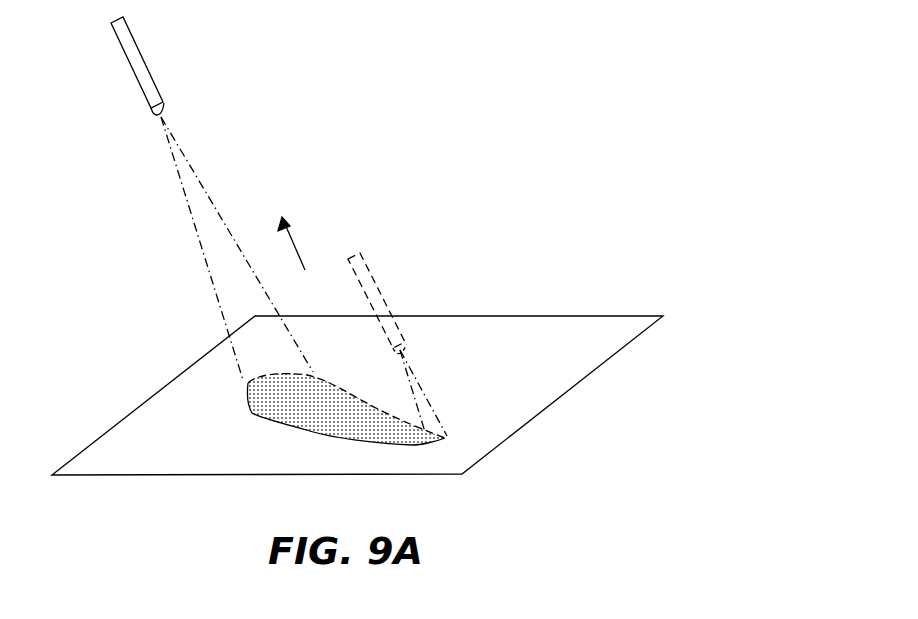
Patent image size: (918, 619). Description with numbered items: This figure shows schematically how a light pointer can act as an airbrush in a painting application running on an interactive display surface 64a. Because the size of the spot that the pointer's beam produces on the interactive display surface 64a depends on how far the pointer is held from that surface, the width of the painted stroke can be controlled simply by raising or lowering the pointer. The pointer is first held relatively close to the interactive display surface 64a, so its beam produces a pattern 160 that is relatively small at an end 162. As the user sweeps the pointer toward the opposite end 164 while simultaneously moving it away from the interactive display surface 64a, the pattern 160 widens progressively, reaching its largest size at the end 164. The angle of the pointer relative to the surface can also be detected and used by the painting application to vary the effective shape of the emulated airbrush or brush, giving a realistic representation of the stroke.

The interactive display surface 64a is at (143, 413).
The end 164 is at (243, 387).
The end 162 is at (447, 437).
The pattern 160 is at (330, 416).